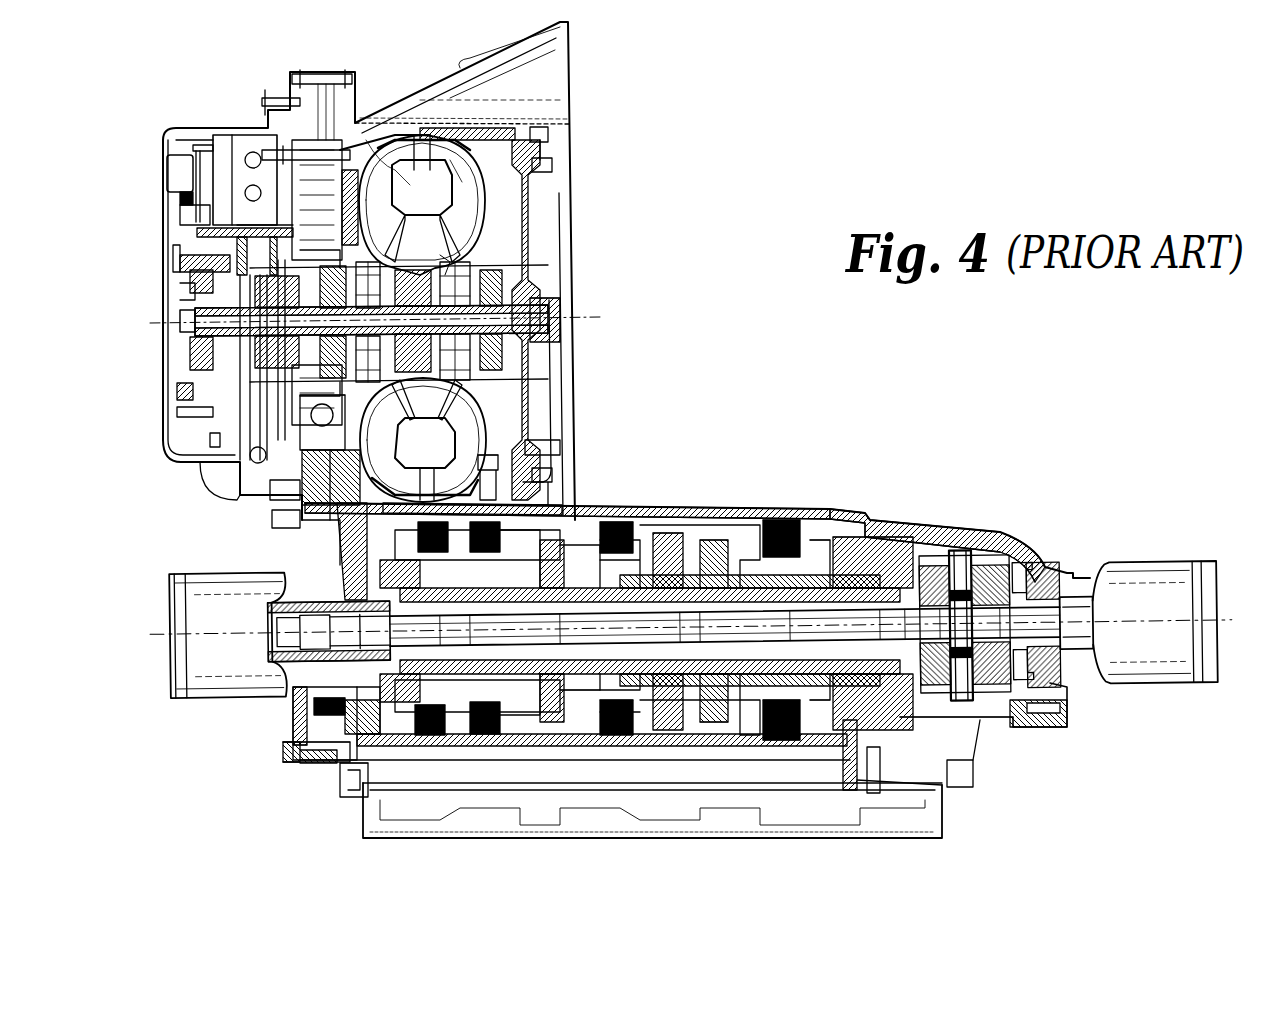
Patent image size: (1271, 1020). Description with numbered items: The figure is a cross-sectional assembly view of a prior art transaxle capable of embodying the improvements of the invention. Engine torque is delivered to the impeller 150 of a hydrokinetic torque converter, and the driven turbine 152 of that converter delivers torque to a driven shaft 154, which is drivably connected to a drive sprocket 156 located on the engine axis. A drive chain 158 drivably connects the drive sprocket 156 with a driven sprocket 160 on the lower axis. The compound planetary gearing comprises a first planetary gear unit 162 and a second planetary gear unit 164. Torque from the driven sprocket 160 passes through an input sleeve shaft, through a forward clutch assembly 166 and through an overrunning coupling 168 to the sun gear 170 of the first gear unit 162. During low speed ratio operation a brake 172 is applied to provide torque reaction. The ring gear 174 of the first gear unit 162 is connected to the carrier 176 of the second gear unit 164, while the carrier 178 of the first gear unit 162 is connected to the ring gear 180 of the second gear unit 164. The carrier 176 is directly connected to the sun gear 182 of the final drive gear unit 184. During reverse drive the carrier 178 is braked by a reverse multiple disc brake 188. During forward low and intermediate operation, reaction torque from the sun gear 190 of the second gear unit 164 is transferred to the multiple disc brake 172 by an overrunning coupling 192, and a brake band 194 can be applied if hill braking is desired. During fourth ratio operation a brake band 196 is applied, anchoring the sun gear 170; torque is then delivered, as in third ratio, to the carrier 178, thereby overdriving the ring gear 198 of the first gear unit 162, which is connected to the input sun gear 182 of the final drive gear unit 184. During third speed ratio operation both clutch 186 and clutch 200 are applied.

The impeller 150 is at (392, 165).
The turbine 152 is at (463, 187).
The driven shaft 154 is at (540, 277).
The drive sprocket 156 is at (323, 387).
The drive chain 158 is at (300, 730).
The driven sprocket 160 is at (300, 697).
The planetary gear unit 162 is at (670, 733).
The planetary gear unit 164 is at (762, 730).
The forward clutch assembly 166 is at (340, 757).
The overrunning coupling 168 is at (425, 748).
The sun gear 170 is at (580, 745).
The brake 172 is at (775, 532).
The ring gear 174 is at (707, 733).
The carrier 176 is at (813, 733).
The carrier 178 is at (712, 737).
The ring gear 180 is at (783, 733).
The sun gear 182 is at (880, 560).
The final drive gear unit 184 is at (943, 713).
The clutch 186 is at (533, 740).
The reverse multiple disc brake 188 is at (615, 512).
The sun gear 190 is at (718, 537).
The overrunning coupling 192 is at (808, 552).
The brake band 194 is at (712, 532).
The brake band 196 is at (400, 748).
The ring gear 198 is at (620, 740).
The clutch 200 is at (480, 520).